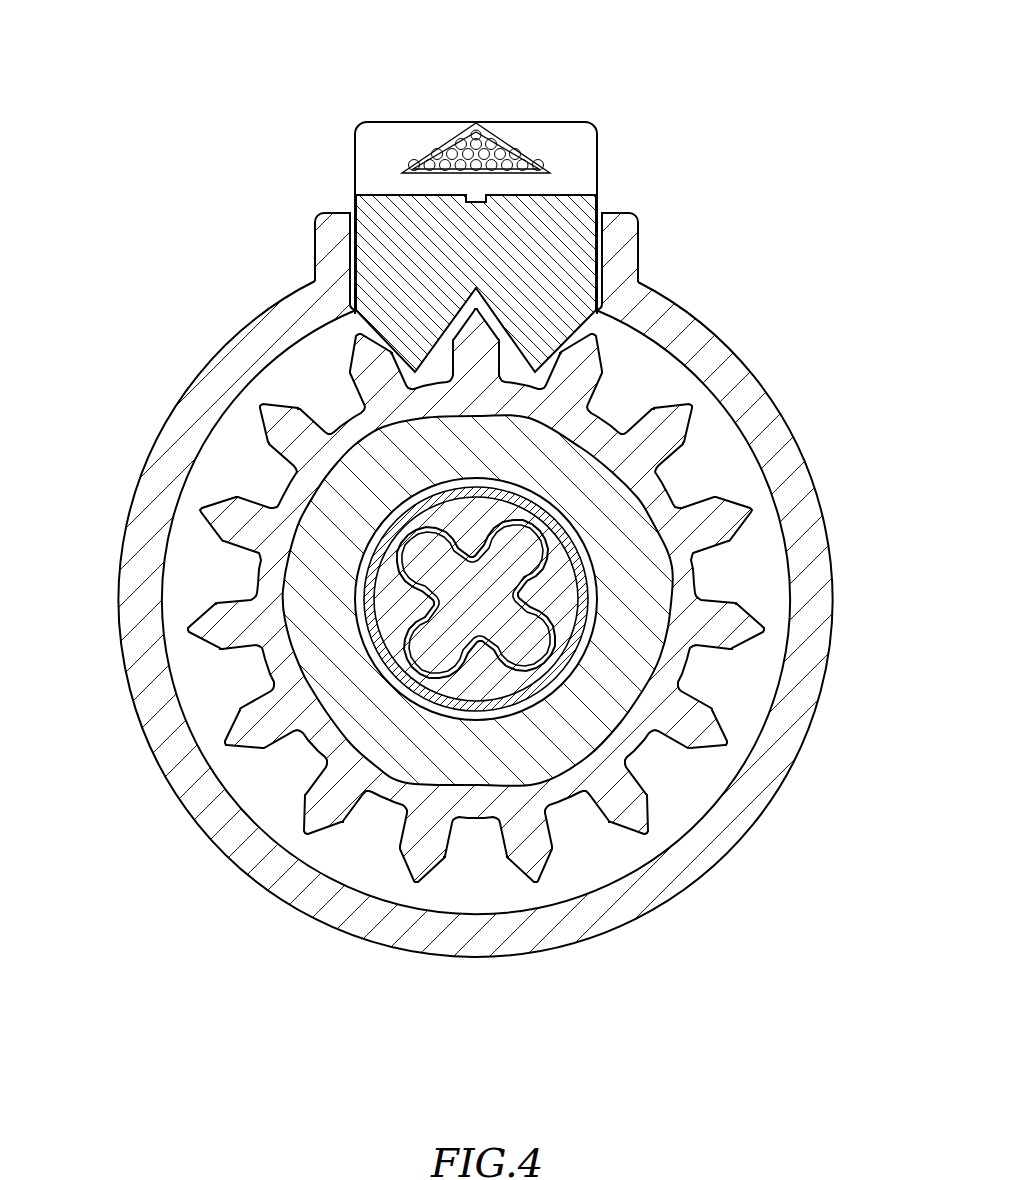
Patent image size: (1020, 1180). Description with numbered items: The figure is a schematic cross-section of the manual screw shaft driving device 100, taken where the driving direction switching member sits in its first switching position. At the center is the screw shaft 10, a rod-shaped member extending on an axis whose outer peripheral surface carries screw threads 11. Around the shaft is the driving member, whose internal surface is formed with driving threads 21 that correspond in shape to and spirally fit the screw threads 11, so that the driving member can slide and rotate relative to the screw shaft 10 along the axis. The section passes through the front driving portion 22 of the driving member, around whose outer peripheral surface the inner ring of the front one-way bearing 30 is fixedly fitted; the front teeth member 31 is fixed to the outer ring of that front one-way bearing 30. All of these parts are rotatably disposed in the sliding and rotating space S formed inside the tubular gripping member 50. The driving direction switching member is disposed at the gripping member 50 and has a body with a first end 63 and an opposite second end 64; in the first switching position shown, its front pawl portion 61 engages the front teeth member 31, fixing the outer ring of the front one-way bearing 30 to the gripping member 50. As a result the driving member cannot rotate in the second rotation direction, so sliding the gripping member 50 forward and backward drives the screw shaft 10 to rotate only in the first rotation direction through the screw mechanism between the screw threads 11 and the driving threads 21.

The manual screw shaft driving device 100 is at (800, 33).
The screw shaft 10 is at (443, 620).
The screw threads 11 is at (430, 560).
The driving threads 21 is at (557, 633).
The front driving portion 22 is at (558, 595).
The front one-way bearing 30 is at (600, 510).
The front teeth member 31 is at (680, 422).
The gripping member 50 is at (150, 707).
The front pawl portion 61 is at (407, 342).
The first end 63 is at (390, 192).
The second end 64 is at (550, 133).
The sliding and rotating space S is at (470, 888).